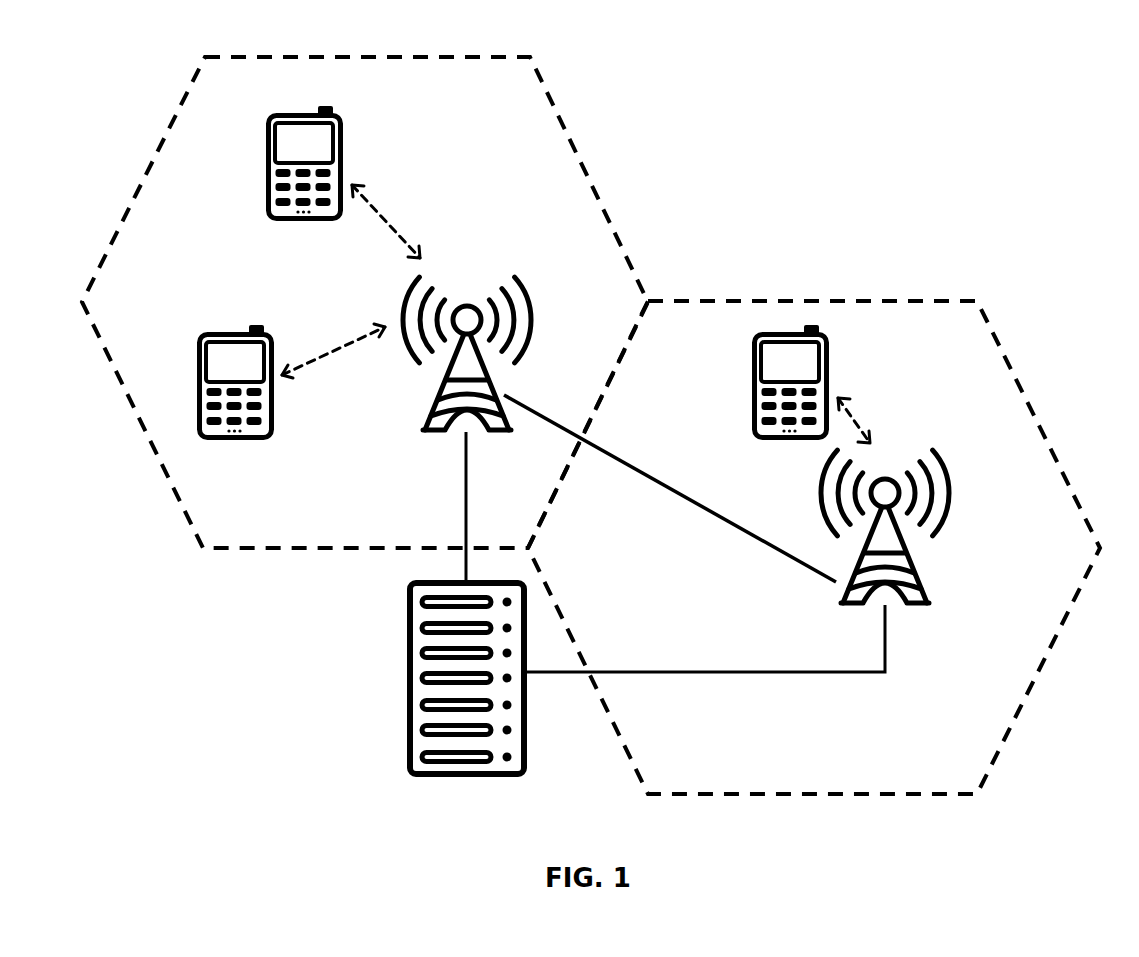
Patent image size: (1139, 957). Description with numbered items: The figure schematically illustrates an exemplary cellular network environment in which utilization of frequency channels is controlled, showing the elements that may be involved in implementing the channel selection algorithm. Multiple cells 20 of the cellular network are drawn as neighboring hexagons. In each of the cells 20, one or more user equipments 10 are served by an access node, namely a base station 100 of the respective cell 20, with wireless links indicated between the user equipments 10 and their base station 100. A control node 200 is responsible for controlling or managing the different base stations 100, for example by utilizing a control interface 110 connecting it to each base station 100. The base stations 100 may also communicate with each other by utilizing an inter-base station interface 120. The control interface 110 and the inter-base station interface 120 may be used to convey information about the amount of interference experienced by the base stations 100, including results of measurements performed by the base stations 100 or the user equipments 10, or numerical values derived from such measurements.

The user equipment 10 is at (285, 221).
The cell 20 is at (257, 548).
The base station 100 is at (503, 432).
The control interface 110 is at (462, 476).
The inter-base station interface 120 is at (644, 472).
The control node 200 is at (406, 688).